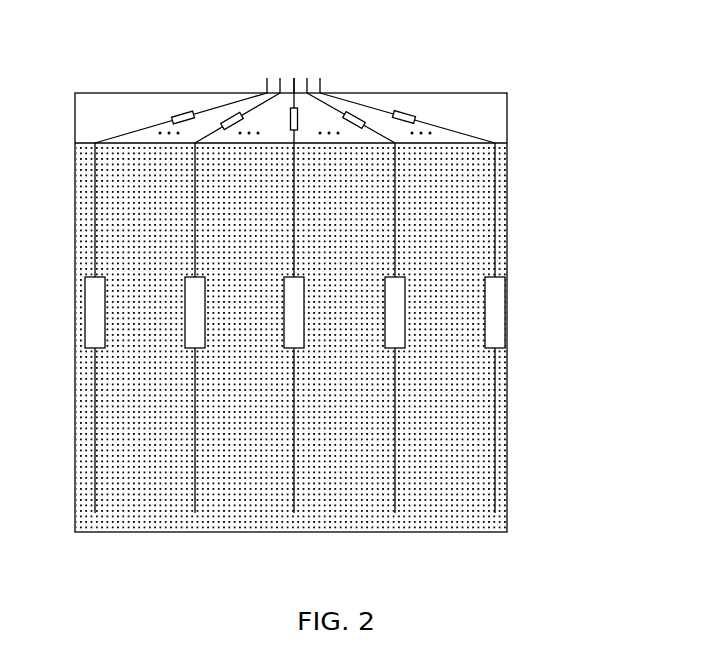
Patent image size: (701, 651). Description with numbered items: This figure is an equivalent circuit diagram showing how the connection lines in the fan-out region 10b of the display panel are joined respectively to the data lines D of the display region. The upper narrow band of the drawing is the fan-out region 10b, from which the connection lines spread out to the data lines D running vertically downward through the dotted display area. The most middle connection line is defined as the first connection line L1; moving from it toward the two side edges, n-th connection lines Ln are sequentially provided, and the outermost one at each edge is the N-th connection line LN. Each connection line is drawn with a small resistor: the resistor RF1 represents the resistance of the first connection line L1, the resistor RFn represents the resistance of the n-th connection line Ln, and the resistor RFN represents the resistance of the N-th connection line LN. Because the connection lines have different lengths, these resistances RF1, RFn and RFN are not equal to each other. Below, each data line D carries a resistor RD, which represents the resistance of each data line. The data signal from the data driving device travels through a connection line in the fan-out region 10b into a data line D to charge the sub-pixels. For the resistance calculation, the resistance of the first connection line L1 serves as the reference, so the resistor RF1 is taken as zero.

The fan-out region 10b is at (492, 123).
The data line D is at (197, 497).
The resistance of each data line RD is at (497, 315).
The resistance of the N-th connection line RFN is at (172, 116).
The resistance of the n-th connection line RFn is at (227, 124).
The resistance of the first connection line RF1 is at (289, 118).
The first connection line L1 is at (294, 76).
The n-th connection line Ln is at (346, 112).
The N-th connection line LN is at (450, 124).